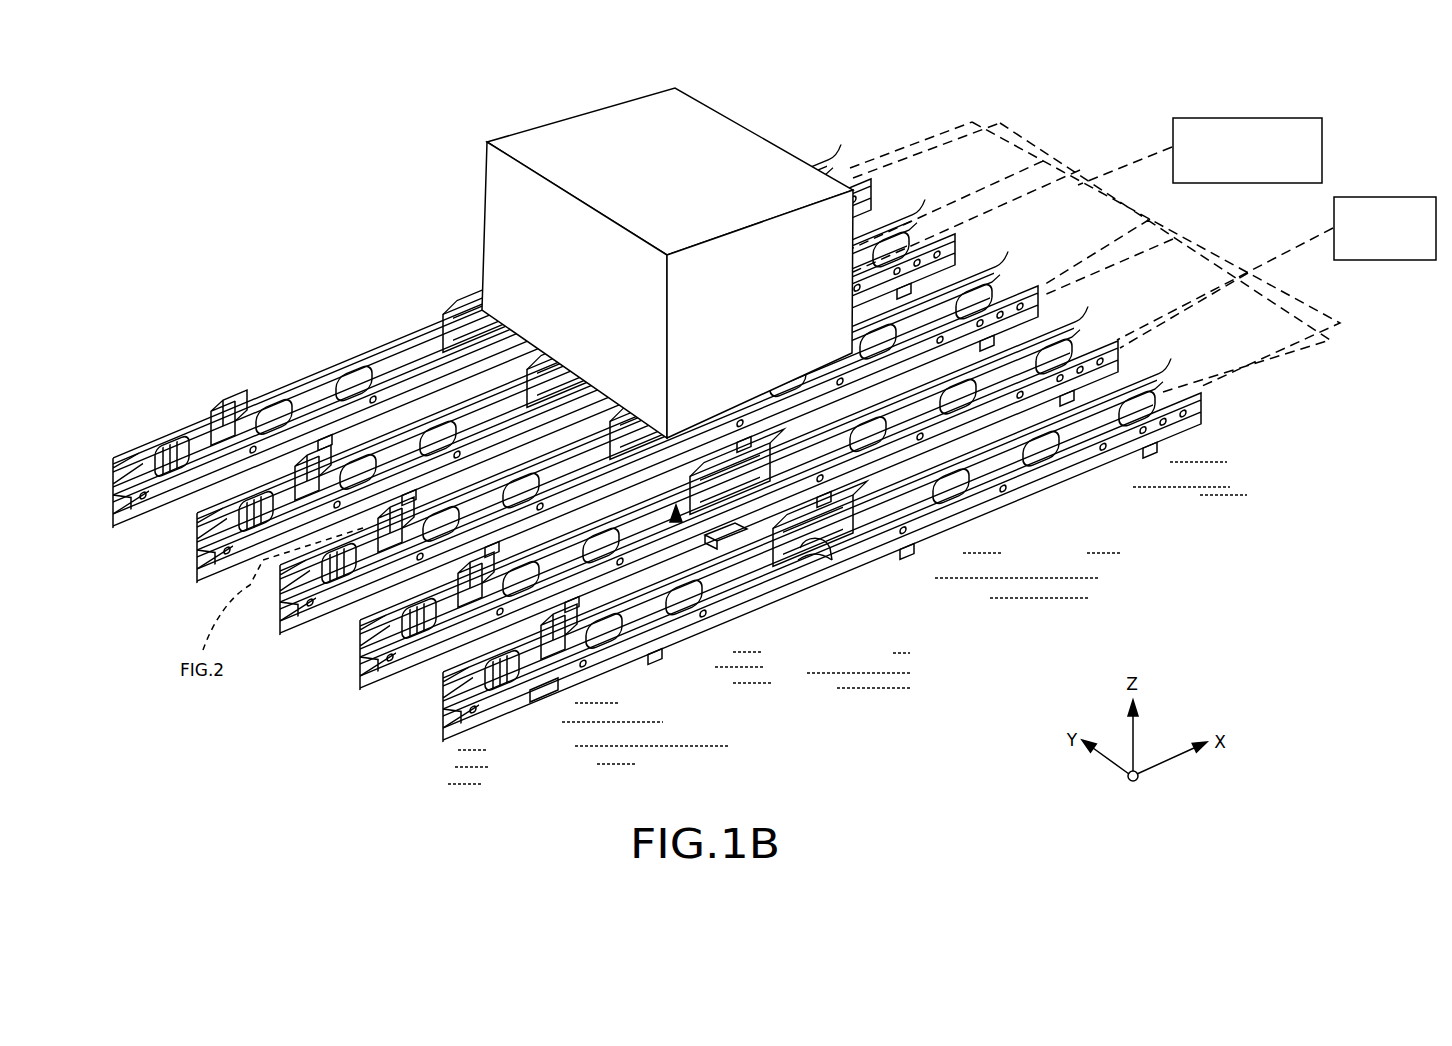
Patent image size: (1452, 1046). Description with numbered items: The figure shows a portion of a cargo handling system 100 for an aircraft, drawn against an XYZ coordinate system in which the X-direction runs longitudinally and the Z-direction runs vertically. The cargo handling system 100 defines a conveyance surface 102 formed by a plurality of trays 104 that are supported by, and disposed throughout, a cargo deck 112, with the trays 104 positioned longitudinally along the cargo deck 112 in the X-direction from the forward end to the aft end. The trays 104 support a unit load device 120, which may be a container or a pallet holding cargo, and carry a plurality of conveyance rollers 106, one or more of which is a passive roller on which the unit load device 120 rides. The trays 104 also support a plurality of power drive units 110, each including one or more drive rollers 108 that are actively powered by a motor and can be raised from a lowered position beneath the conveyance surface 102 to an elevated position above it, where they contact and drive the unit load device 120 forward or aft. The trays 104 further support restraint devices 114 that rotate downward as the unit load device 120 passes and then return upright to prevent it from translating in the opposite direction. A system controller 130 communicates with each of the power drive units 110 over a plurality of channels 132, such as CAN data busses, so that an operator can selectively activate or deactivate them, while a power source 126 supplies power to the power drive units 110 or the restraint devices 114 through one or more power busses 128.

The cargo handling system 100 is at (262, 118).
The conveyance surface 102 is at (642, 454).
The trays 104 is at (960, 265).
The conveyance rollers 106 is at (348, 387).
The drive rollers 108 is at (815, 550).
The power drive units 110 is at (725, 540).
The cargo deck 112 is at (1026, 566).
The restraint devices 114 is at (543, 693).
The unit load device 120 is at (703, 127).
The power source 126 is at (1395, 197).
The power busses 128 is at (1218, 378).
The system controller 130 is at (1200, 118).
The channels 132 is at (928, 138).